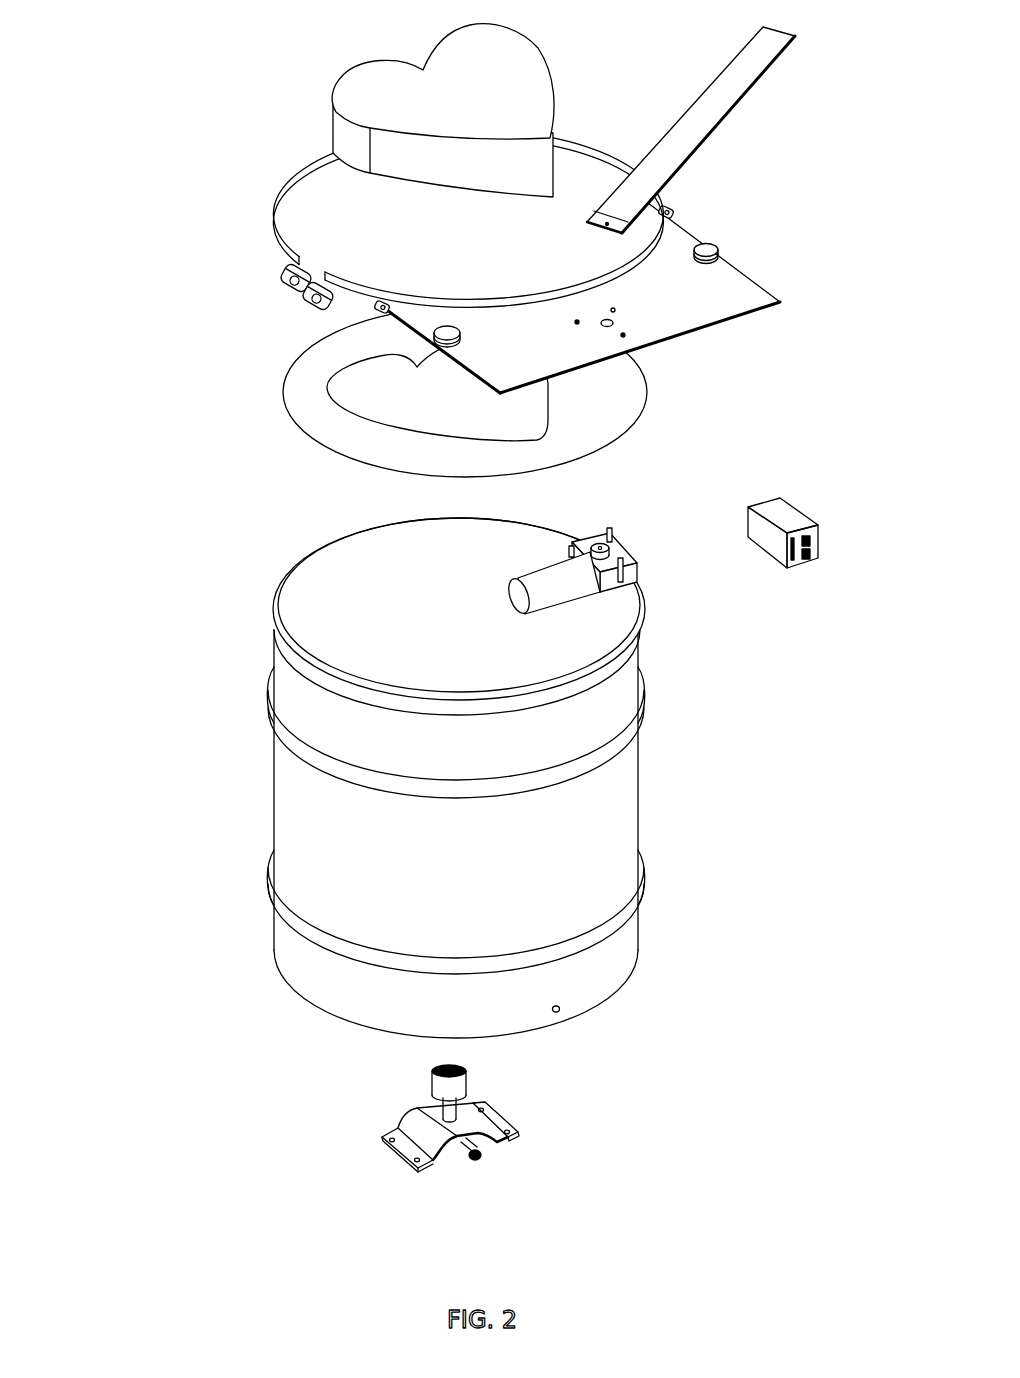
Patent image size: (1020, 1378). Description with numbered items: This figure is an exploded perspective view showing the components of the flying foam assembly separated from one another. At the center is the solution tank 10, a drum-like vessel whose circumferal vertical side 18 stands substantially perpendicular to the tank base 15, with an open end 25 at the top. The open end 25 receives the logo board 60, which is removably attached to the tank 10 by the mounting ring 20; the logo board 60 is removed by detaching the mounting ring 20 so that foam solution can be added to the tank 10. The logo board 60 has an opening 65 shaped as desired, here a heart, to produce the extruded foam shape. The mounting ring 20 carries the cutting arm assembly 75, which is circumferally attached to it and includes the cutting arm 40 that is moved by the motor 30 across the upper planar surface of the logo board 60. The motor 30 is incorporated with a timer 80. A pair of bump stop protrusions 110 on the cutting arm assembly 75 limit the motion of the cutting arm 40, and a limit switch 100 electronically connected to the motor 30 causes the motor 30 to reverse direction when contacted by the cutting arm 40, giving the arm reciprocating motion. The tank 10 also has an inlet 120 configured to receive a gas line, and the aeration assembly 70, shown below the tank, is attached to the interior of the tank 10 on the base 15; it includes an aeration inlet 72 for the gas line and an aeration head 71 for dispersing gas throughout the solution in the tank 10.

The solution tank 10 is at (467, 633).
The tank base 15 is at (632, 1115).
The circumferal vertical side 18 is at (637, 808).
The mounting ring 20 is at (290, 272).
The open end 25 is at (340, 610).
The motor 30 is at (535, 600).
The cutting arm 40 is at (700, 92).
The logo board 60 is at (364, 380).
The opening 65 is at (407, 400).
The aeration assembly 70 is at (397, 1148).
The aeration head 71 is at (430, 1083).
The aeration inlet 72 is at (480, 1158).
The cutting arm assembly 75 is at (740, 305).
The timer 80 is at (772, 500).
The limit switch 100 is at (675, 212).
The bump stop protrusions 110 is at (720, 250).
The inlet 120 is at (562, 1008).